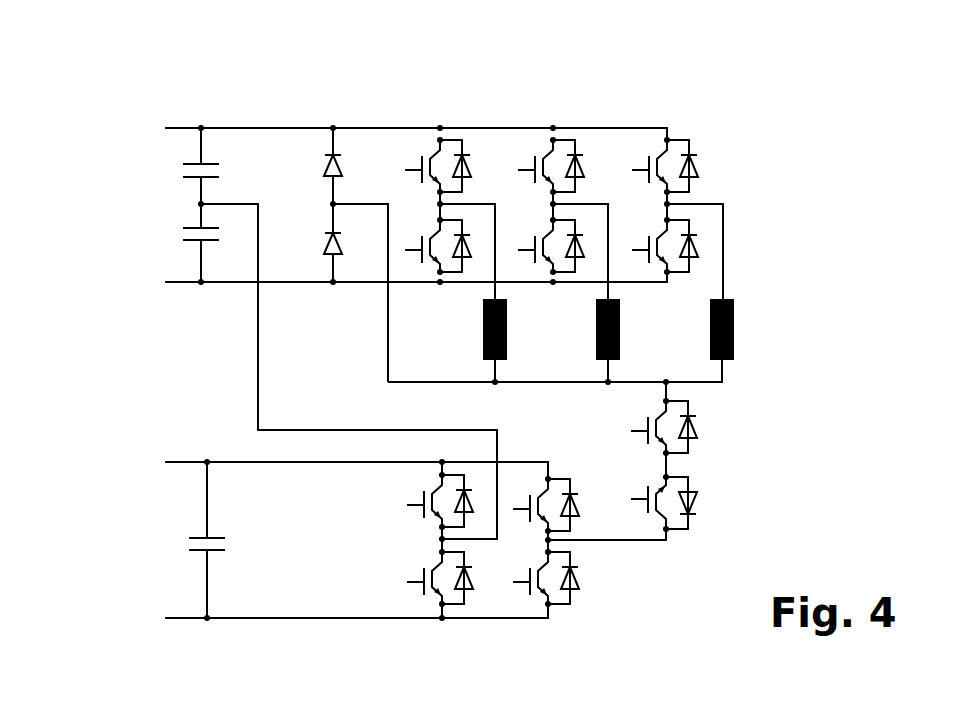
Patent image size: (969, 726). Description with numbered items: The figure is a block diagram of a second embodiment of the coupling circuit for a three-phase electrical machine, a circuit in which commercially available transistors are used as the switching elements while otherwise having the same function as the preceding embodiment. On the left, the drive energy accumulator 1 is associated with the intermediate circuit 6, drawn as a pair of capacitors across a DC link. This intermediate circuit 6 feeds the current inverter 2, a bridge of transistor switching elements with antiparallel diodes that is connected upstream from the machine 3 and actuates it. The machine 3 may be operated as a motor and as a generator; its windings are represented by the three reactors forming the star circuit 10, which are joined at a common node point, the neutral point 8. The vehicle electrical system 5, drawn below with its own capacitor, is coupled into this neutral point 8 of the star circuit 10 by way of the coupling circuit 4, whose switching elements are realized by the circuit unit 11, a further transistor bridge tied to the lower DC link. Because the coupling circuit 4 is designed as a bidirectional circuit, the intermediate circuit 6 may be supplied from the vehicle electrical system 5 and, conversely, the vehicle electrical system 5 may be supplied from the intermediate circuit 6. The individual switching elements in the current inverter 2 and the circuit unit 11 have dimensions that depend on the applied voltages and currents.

The drive energy accumulator 1 is at (107, 238).
The current inverter 2 is at (595, 115).
The three-phase machine 3 is at (747, 348).
The coupling circuit 4 is at (228, 413).
The vehicle electrical system 5 is at (117, 537).
The intermediate circuit 6 is at (161, 166).
The neutral point 8 is at (690, 391).
The star circuit 10 is at (543, 382).
The circuit unit 11 is at (525, 635).